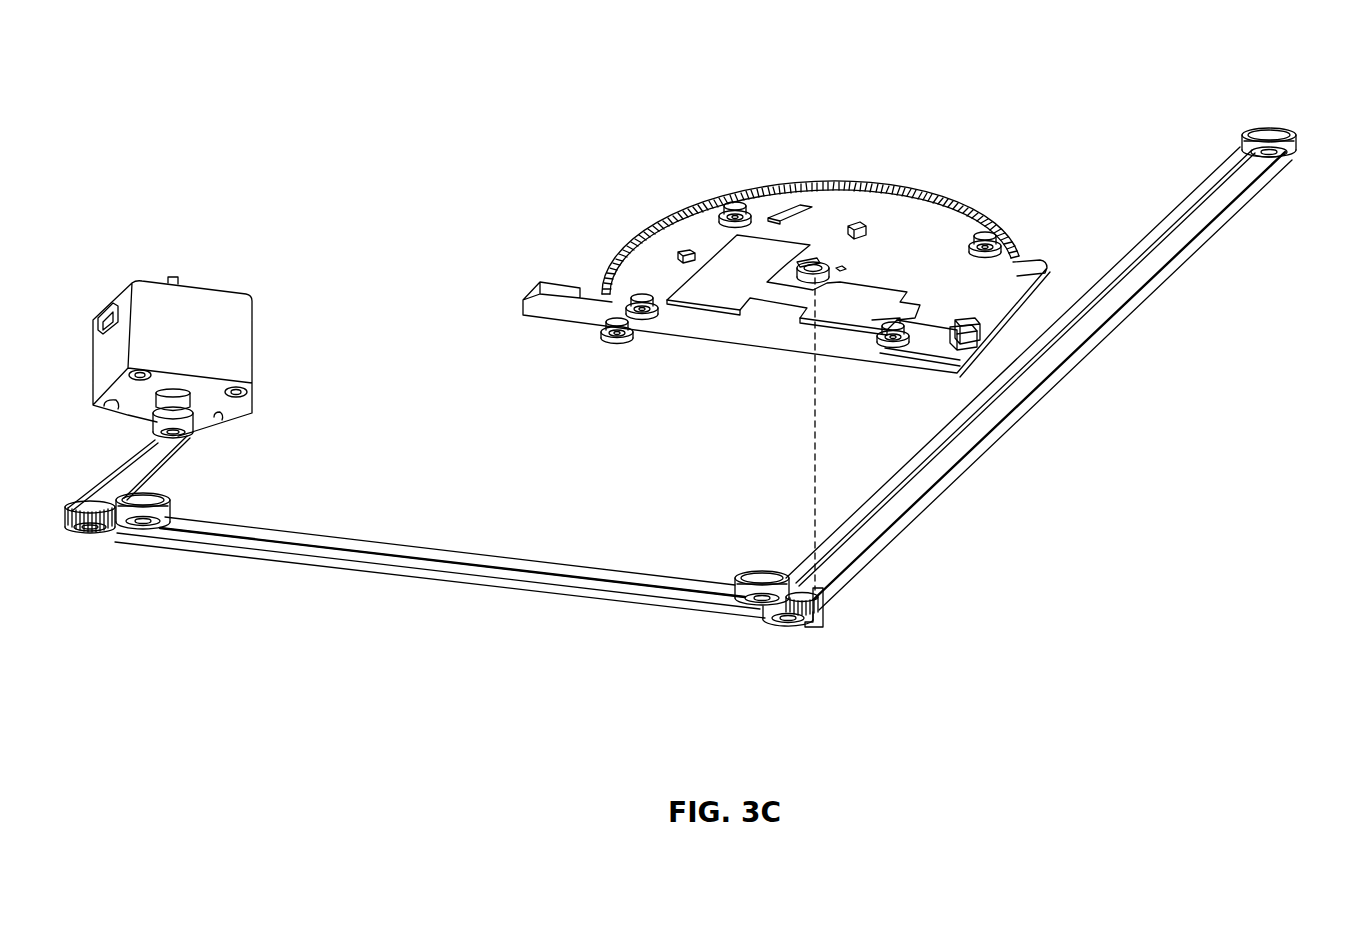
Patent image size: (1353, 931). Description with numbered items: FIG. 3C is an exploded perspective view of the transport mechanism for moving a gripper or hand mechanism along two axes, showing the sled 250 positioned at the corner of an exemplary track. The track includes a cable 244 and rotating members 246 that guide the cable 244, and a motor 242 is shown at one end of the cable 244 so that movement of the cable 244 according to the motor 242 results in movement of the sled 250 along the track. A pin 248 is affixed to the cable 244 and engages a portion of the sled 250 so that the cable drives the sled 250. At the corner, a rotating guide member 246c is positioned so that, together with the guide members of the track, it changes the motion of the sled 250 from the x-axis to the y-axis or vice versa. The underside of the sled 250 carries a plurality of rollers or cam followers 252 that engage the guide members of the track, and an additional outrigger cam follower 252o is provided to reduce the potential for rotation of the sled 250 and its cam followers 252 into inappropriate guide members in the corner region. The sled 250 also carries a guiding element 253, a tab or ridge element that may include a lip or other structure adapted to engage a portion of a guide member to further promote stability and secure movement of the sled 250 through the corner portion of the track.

The motor 242 is at (222, 312).
The cable 244 is at (330, 568).
The rotating members 246 is at (103, 537).
The rotating guide member 246c is at (770, 623).
The pin 248 is at (822, 605).
The sled 250 is at (950, 209).
The cam followers 252 is at (745, 210).
The outrigger cam follower 252o is at (603, 340).
The guiding element 253 is at (965, 350).